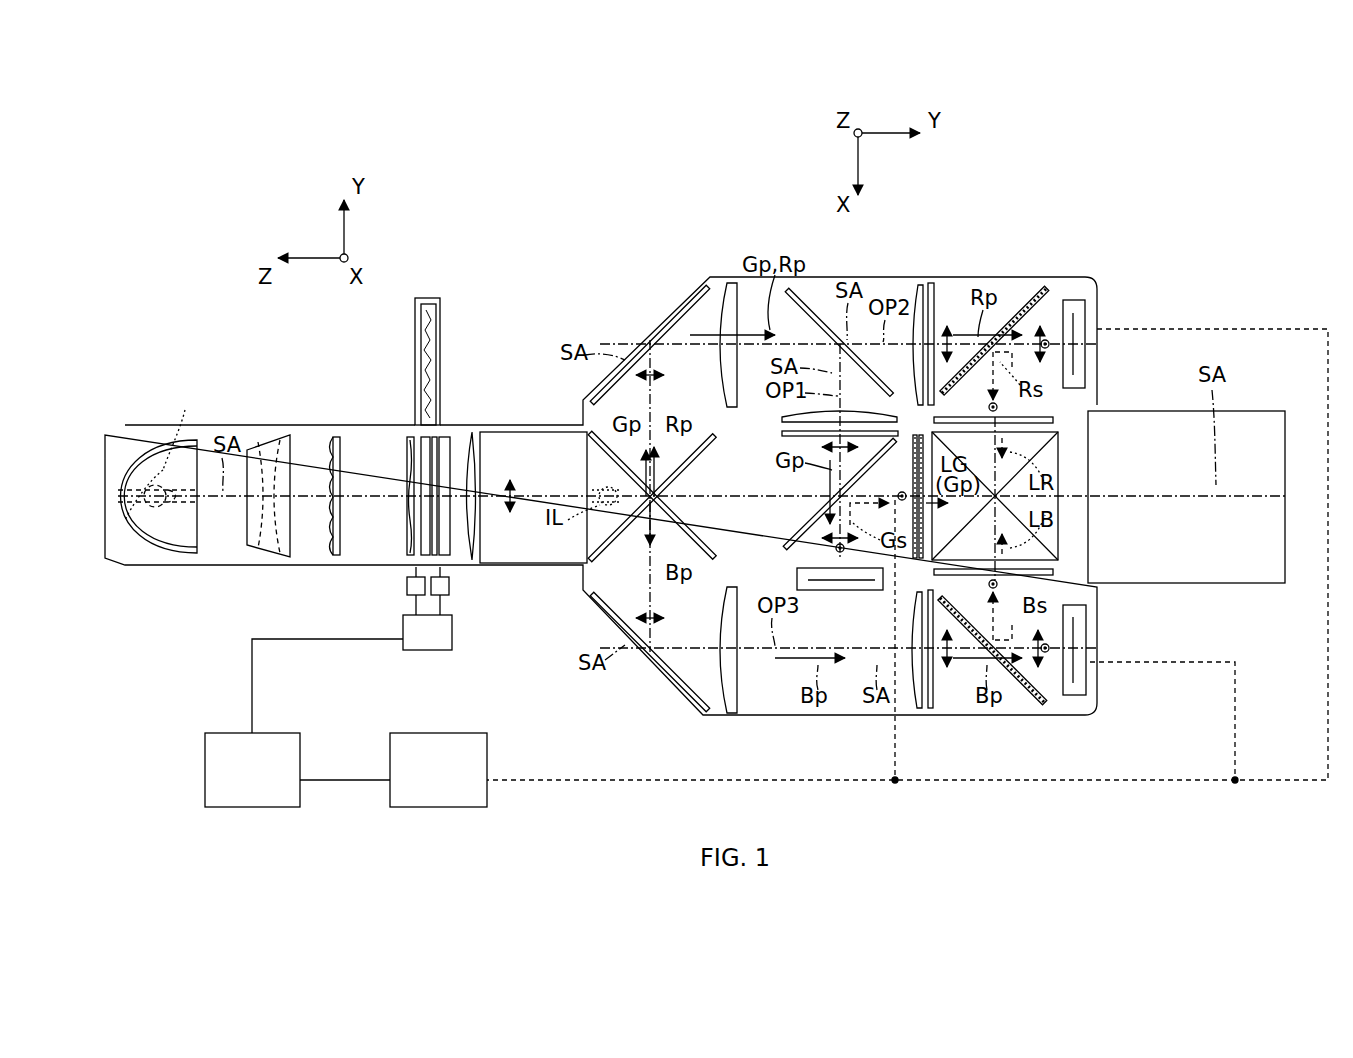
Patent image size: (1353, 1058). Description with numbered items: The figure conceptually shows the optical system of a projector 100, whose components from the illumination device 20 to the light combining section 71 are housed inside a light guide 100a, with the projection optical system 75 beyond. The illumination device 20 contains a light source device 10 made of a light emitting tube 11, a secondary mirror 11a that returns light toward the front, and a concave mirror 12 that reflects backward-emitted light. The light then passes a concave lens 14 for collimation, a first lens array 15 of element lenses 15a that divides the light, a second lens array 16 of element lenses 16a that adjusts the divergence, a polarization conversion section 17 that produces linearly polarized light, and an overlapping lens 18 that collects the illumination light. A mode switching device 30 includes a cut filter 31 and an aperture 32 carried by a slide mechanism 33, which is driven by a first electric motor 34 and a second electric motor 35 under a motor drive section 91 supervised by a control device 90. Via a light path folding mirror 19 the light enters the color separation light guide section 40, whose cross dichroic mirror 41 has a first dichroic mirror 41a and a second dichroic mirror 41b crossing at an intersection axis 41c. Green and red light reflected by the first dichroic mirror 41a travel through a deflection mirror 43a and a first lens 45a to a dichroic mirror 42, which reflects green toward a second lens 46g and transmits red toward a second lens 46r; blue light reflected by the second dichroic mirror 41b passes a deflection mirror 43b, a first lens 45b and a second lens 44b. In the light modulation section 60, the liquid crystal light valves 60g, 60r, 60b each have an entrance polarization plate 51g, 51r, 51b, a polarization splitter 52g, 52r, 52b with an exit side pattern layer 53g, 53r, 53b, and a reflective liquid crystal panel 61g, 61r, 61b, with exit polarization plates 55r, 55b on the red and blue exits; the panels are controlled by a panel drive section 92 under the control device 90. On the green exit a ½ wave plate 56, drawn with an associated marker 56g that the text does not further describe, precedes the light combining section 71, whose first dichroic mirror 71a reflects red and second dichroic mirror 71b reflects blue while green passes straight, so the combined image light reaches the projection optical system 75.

The projector 100 is at (1281, 85).
The light guide 100a is at (252, 425).
The light source device 10 is at (158, 496).
The light emitting tube 11 is at (154, 503).
The secondary mirror 11a is at (169, 452).
The concave mirror 12 is at (176, 556).
The concave lens 14 is at (272, 548).
The first lens array 15 is at (318, 528).
The element lens 15a is at (327, 542).
The second lens array 16 is at (377, 469).
The element lens 16a is at (409, 462).
The polarization conversion section 17 is at (446, 437).
The overlapping lens 18 is at (474, 450).
The light path folding mirror 19 is at (528, 565).
The illumination device 20 is at (330, 470).
The mode switching device 30 is at (447, 476).
The cut filter 31 is at (420, 348).
The aperture 32 is at (440, 335).
The slide mechanism 33 is at (446, 580).
The first electric motor 34 is at (407, 586).
The second electric motor 35 is at (452, 632).
The color separation light guide section 40 is at (640, 280).
The cross dichroic mirror 41 is at (627, 540).
The first dichroic mirror 41a is at (590, 542).
The second dichroic mirror 41b is at (590, 440).
The intersection axis 41c is at (656, 497).
The dichroic mirror 42 is at (808, 300).
The deflection mirror 43a is at (694, 297).
The deflection mirror 43b is at (660, 663).
The second lens 44b is at (914, 710).
The first lens 45a is at (728, 283).
The first lens 45b is at (728, 714).
The second lens 46g is at (783, 418).
The second lens 46r is at (915, 286).
The entrance polarization plate 51g is at (783, 435).
The entrance polarization plate 51r is at (932, 284).
The entrance polarization plate 51b is at (932, 710).
The polarization splitter 52g is at (795, 540).
The polarization splitter 52r is at (1003, 332).
The polarization splitter 52b is at (1040, 704).
The exit side pattern layer 53g is at (792, 548).
The exit side pattern layer 53r is at (1047, 291).
The exit side pattern layer 53b is at (941, 599).
The exit polarization plate 55r is at (1053, 418).
The exit polarization plate 55b is at (1053, 575).
The ½ wave plate 56 is at (917, 437).
The light detection point 56g is at (902, 495).
The light modulation section 60 is at (1138, 322).
The liquid crystal light valve 60r is at (1107, 298).
The liquid crystal light valve 60g is at (801, 603).
The liquid crystal light valve 60b is at (1113, 693).
The liquid crystal panel 61r is at (1086, 302).
The liquid crystal panel 61g is at (846, 591).
The liquid crystal panel 61b is at (1088, 706).
The light combining section 71 is at (1067, 529).
The first dichroic mirror 71a is at (998, 475).
The second dichroic mirror 71b is at (998, 528).
The projection optical system 75 is at (1240, 583).
The control device 90 is at (300, 752).
The motor drive section 91 is at (430, 650).
The panel drive section 92 is at (487, 752).